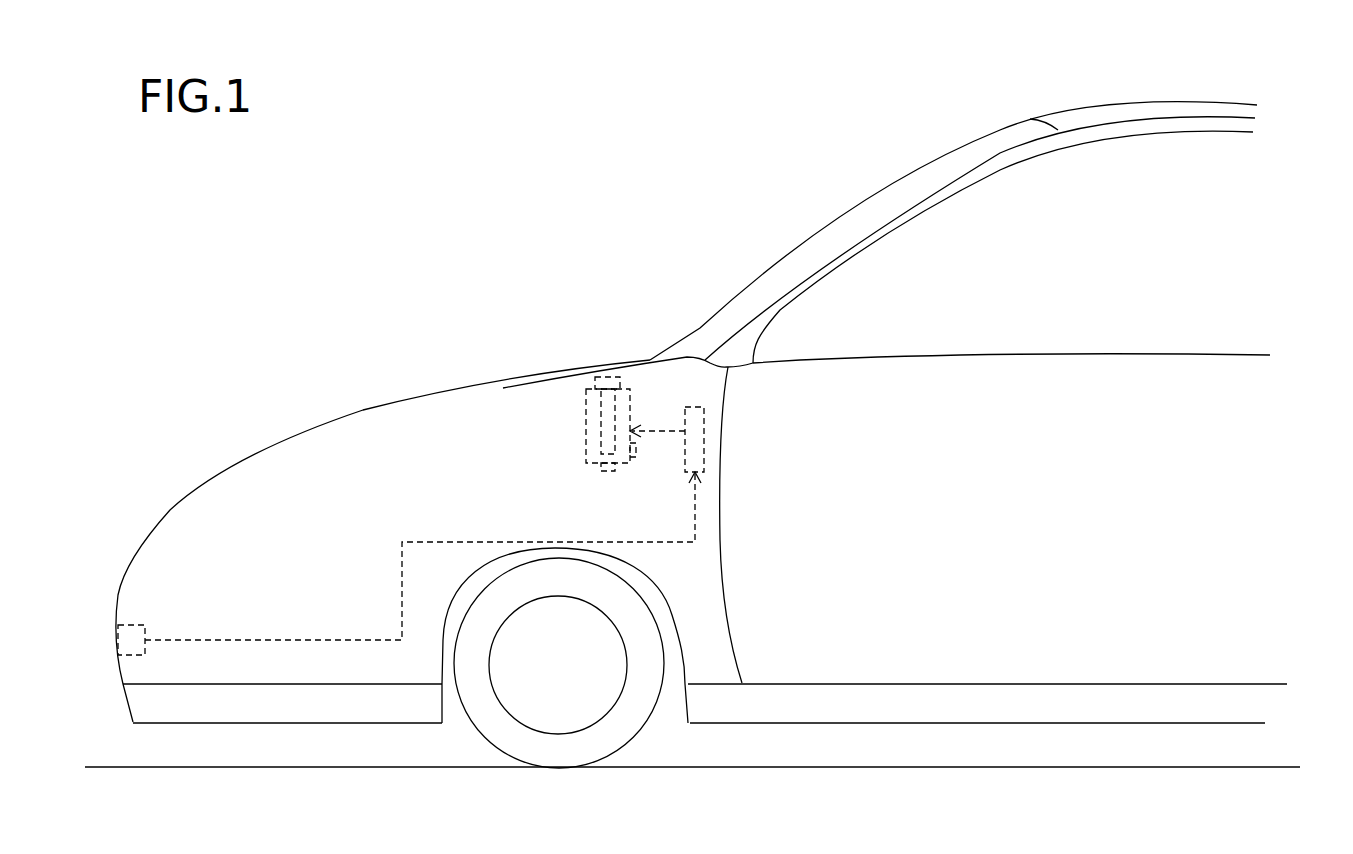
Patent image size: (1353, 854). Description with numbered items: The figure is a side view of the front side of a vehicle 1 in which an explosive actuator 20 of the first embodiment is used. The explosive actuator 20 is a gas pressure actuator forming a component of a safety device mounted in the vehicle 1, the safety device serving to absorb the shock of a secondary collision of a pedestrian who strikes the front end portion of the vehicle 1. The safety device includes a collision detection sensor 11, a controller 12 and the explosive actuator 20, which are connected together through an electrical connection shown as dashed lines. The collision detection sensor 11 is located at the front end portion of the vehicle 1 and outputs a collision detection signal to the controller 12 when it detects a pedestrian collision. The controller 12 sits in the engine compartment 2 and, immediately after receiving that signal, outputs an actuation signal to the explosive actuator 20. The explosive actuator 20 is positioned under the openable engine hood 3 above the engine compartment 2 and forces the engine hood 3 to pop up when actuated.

The vehicle 1 is at (701, 391).
The engine compartment 2 is at (365, 410).
The engine hood 3 is at (562, 375).
The collision detection sensor 11 is at (138, 625).
The controller 12 is at (685, 464).
The explosive actuator 20 is at (586, 410).